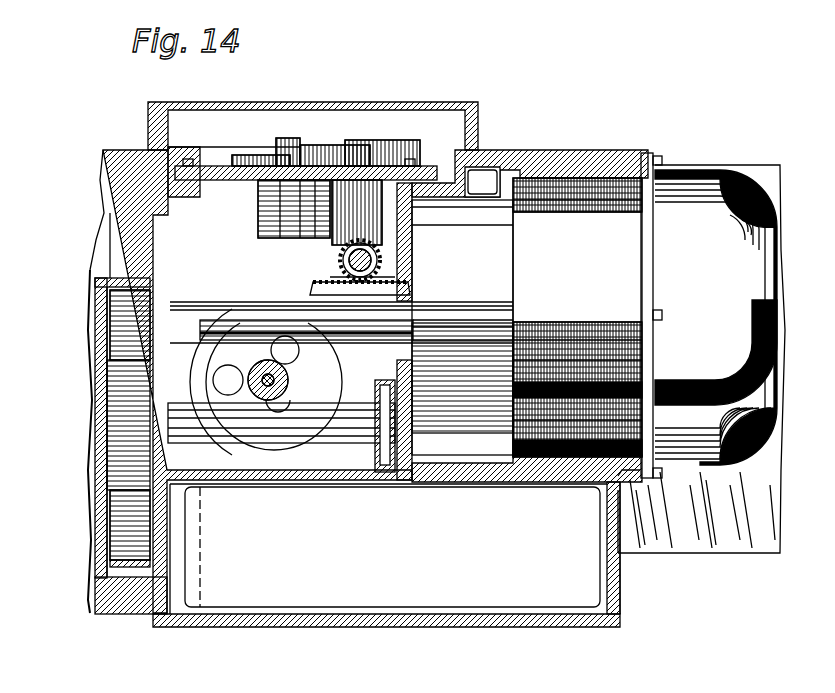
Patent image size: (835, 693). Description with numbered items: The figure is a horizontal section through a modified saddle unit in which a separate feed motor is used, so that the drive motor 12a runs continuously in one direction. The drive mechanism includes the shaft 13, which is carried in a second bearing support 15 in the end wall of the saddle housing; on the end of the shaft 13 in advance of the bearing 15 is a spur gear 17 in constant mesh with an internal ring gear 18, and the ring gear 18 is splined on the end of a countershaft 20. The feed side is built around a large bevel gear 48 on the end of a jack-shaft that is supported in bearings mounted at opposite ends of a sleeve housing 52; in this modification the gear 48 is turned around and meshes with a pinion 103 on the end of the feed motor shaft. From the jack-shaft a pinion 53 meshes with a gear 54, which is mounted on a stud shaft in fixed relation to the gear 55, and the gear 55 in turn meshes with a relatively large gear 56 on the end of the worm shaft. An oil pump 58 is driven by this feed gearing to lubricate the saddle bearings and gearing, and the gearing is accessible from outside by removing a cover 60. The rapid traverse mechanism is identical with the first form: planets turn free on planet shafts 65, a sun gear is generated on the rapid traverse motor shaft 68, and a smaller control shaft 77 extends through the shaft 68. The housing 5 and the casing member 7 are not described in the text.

The housing 5 is at (530, 150).
The casing end member 7 is at (667, 540).
The drive motor 12a is at (537, 315).
The shaft 13 is at (243, 316).
The bearing support 15 is at (95, 610).
The spur gear 17 is at (145, 300).
The internal ring gear 18 is at (100, 304).
The countershaft 20 is at (215, 432).
The large bevel gear 48 is at (402, 291).
The sleeve housing 52 is at (348, 220).
The pinion 53 is at (380, 150).
The gear 54 is at (245, 157).
The gear 55 is at (283, 140).
The gear 56 is at (325, 147).
The oil pump 58 is at (258, 214).
The cover 60 is at (456, 106).
The planet shafts 65 is at (230, 374).
The rapid traverse motor shaft 68 is at (283, 380).
The control shaft 77 is at (290, 387).
The pinion 103 is at (385, 262).